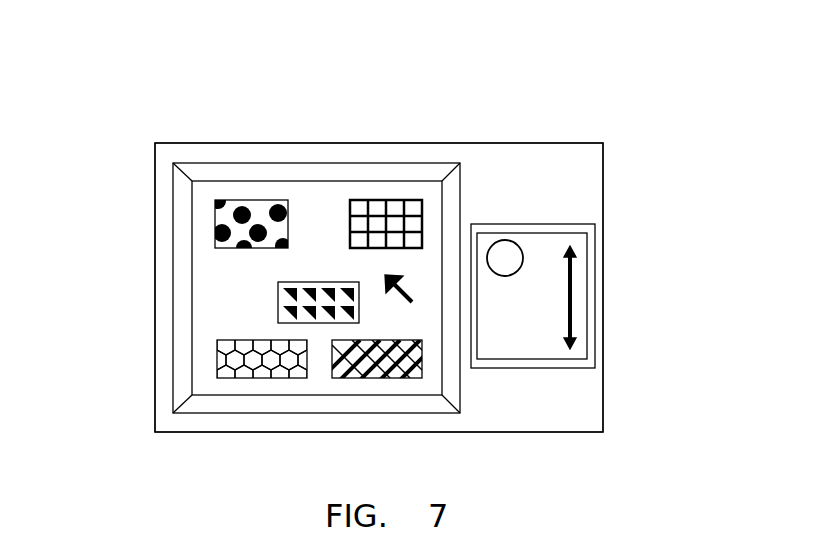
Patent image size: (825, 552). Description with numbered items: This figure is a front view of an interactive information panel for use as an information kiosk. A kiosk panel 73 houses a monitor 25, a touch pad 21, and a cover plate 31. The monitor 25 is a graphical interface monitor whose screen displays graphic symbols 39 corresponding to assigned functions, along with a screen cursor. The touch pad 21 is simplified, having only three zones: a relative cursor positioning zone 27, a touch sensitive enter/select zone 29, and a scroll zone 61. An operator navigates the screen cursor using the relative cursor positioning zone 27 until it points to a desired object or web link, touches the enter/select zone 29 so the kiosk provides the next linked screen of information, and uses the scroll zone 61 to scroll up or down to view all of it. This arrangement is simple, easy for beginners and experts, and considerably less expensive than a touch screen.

The touch pad 21 is at (600, 255).
The monitor 25 is at (197, 208).
The relative cursor positioning zone 27 is at (493, 320).
The touch sensitive enter/select zone 29 is at (507, 254).
The cover plate 31 is at (547, 220).
The graphic symbols 39 is at (215, 348).
The scroll zone 61 is at (573, 328).
The kiosk panel 73 is at (573, 170).